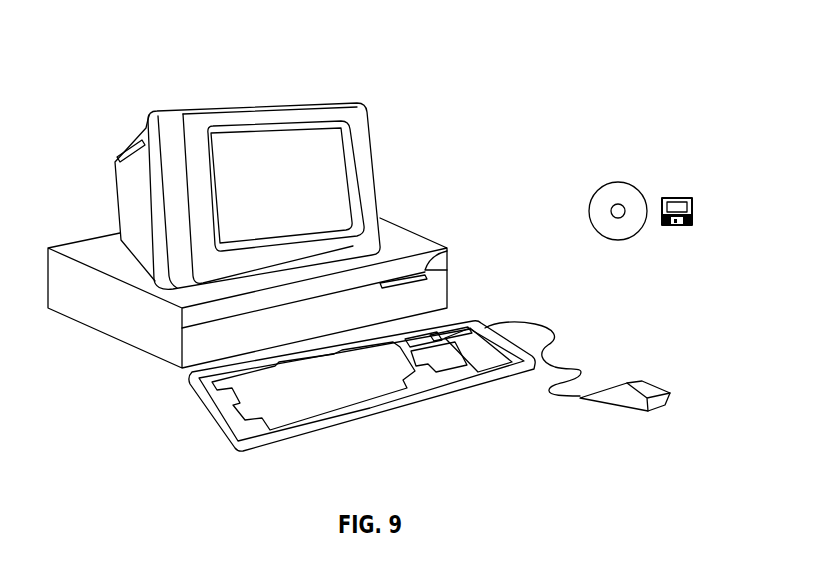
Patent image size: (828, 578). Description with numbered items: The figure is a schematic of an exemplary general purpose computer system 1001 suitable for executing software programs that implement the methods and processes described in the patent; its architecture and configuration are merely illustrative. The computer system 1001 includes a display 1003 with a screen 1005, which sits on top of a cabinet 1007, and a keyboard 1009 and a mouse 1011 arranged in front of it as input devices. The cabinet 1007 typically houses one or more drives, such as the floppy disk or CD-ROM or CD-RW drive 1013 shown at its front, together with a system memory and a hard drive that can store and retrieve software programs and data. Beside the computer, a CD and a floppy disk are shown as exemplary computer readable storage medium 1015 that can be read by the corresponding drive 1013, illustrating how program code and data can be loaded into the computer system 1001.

The general purpose computer system 1001 is at (542, 134).
The display 1003 is at (378, 191).
The screen 1005 is at (345, 152).
The cabinet 1007 is at (150, 355).
The keyboard 1009 is at (367, 416).
The mouse 1011 is at (659, 386).
The floppy disk or CD-ROM or CD-RW drive 1013 is at (449, 252).
The computer readable storage medium 1015 is at (655, 178).